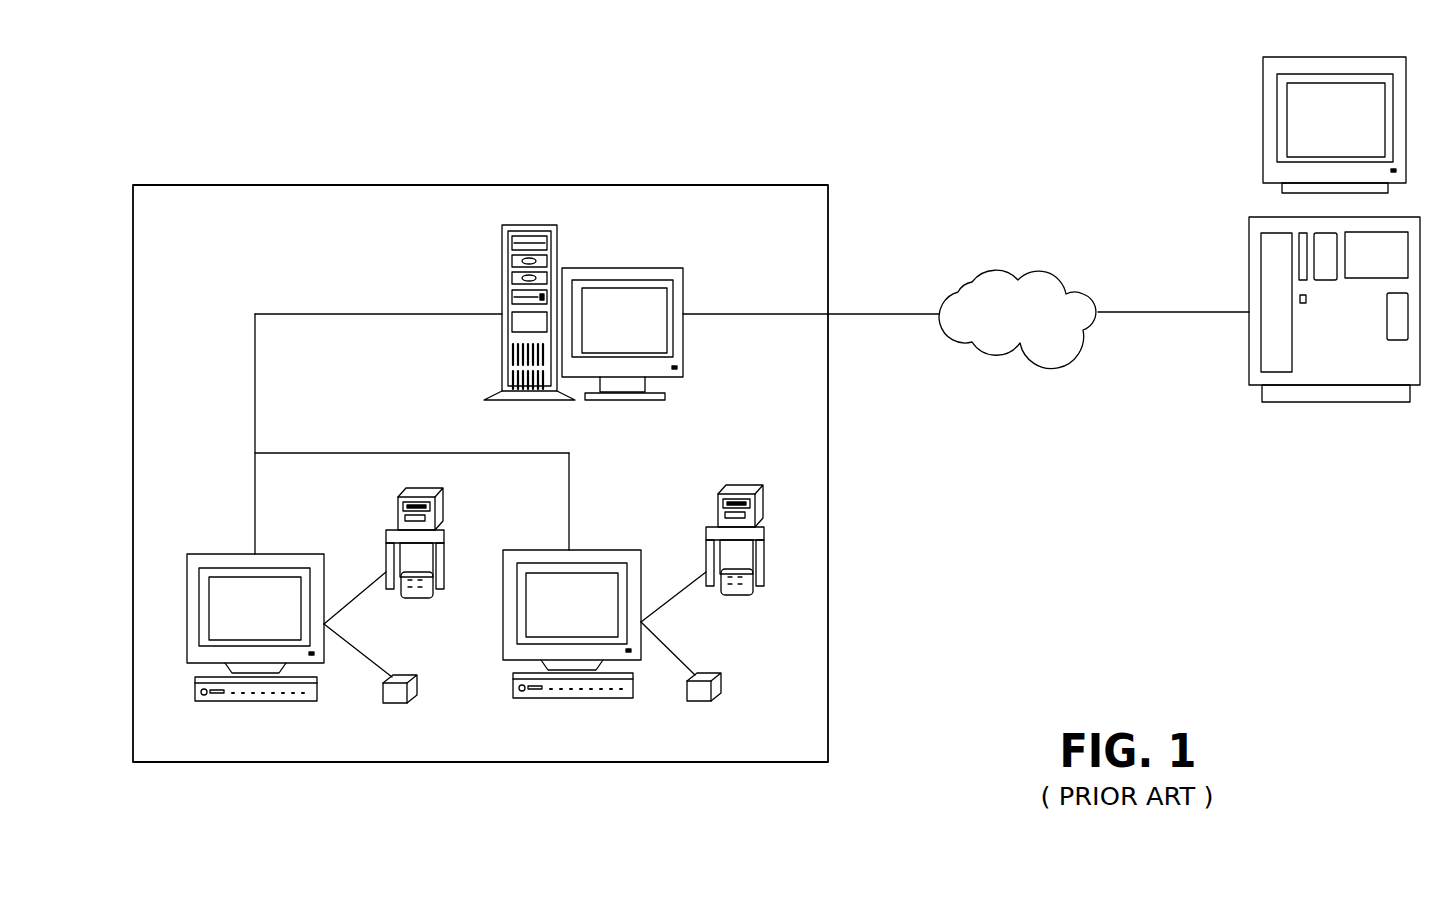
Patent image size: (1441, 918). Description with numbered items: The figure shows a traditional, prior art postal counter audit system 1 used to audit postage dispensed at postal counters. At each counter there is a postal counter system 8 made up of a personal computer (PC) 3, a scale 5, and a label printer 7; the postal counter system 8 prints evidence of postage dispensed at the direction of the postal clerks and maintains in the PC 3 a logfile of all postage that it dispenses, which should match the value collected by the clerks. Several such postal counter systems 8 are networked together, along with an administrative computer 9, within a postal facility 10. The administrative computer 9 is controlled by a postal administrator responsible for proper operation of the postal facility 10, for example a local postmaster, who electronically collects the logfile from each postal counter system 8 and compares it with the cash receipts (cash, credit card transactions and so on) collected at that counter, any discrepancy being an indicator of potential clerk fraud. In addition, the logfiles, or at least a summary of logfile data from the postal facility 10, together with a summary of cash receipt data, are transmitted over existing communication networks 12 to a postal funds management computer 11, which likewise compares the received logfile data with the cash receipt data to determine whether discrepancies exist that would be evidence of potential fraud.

The postal counter audit system 1 is at (877, 150).
The personal computer 3 is at (221, 553).
The scale 5 is at (417, 687).
The label printer 7 is at (442, 521).
The postal counter system 8 is at (330, 534).
The administrative computer 9 is at (602, 241).
The postal facility 10 is at (828, 545).
The postal funds management computer 11 is at (1200, 183).
The communication networks 12 is at (1000, 273).